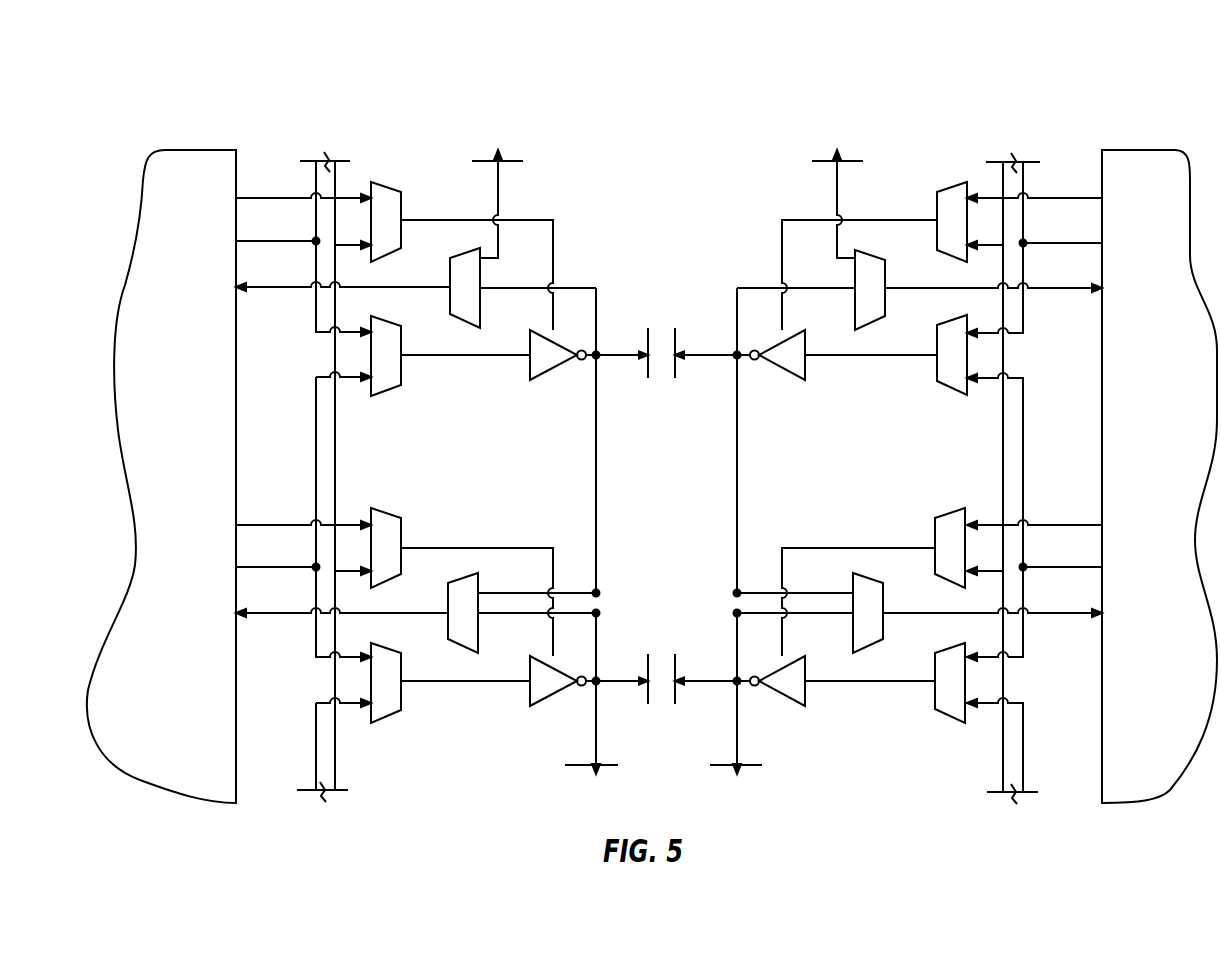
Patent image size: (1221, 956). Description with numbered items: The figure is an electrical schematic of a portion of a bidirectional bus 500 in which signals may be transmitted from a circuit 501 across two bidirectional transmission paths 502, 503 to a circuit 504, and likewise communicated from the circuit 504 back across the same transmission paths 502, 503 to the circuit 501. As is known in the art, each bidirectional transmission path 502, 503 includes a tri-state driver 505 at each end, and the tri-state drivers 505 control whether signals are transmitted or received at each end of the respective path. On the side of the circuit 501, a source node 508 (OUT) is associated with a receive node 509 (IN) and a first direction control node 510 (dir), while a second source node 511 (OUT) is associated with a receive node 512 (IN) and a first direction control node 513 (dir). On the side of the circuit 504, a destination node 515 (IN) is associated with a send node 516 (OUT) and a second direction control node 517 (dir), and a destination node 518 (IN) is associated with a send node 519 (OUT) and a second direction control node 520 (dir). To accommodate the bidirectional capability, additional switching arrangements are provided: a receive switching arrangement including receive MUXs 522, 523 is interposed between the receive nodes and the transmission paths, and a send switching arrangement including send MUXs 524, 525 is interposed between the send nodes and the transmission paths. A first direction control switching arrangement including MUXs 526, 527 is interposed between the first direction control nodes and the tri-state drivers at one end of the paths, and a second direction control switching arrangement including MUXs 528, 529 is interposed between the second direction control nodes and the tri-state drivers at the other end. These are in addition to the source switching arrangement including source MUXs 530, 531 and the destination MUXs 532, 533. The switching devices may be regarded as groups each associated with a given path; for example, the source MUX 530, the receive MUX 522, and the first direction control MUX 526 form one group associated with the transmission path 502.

The bidirectional bus 500 is at (715, 84).
The circuit 501 is at (202, 410).
The circuit 504 is at (1185, 415).
The bidirectional transmission path 502 is at (620, 357).
The bidirectional transmission path 503 is at (618, 683).
The tri-state driver 505 is at (560, 363).
The source node 508 is at (288, 243).
The receive node 509 is at (288, 289).
The first direction control node 510 is at (288, 200).
The source node 511 is at (288, 569).
The receive node 512 is at (288, 615).
The first direction control node 513 is at (288, 527).
The destination node 515 is at (1078, 289).
The send node 516 is at (1078, 243).
The second direction control node 517 is at (1078, 200).
The destination node 518 is at (1078, 615).
The send node 519 is at (1078, 569).
The second direction control node 520 is at (1078, 527).
The receive MUX 522 is at (449, 297).
The receive MUX 523 is at (447, 625).
The send MUX 524 is at (951, 393).
The send MUX 525 is at (950, 720).
The first direction control MUX 526 is at (371, 183).
The first direction control MUX 527 is at (388, 509).
The second direction control MUX 528 is at (958, 183).
The second direction control MUX 529 is at (950, 510).
The source MUX 530 is at (386, 391).
The source MUX 531 is at (386, 721).
The destination MUX 532 is at (885, 300).
The destination MUX 533 is at (885, 626).